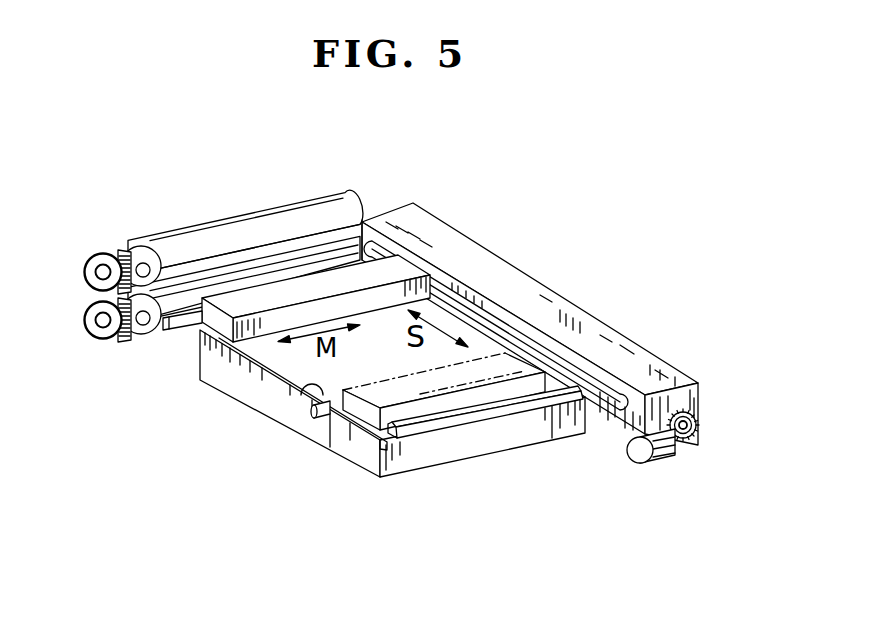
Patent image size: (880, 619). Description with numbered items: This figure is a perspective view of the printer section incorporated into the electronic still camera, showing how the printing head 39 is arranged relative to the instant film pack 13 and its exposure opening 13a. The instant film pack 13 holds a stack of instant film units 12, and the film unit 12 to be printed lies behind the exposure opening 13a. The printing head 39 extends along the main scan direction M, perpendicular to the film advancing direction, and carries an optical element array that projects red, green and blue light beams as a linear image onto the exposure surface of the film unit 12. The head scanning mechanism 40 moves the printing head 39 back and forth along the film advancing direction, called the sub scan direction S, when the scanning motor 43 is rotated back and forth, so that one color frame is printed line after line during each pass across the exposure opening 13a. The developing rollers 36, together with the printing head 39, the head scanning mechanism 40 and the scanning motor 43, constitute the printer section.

The instant film unit 12 is at (293, 363).
The instant film pack 13 is at (313, 474).
The exposure opening 13a is at (300, 393).
The developing rollers 36 is at (253, 280).
The printing head 39 is at (202, 356).
The head scanning mechanism 40 is at (436, 177).
The scanning motor 43 is at (663, 466).